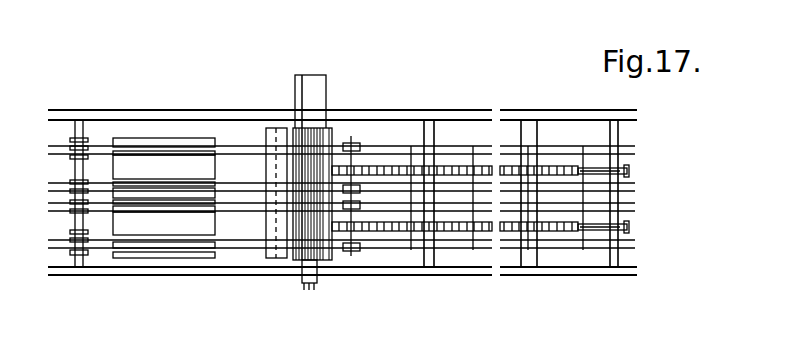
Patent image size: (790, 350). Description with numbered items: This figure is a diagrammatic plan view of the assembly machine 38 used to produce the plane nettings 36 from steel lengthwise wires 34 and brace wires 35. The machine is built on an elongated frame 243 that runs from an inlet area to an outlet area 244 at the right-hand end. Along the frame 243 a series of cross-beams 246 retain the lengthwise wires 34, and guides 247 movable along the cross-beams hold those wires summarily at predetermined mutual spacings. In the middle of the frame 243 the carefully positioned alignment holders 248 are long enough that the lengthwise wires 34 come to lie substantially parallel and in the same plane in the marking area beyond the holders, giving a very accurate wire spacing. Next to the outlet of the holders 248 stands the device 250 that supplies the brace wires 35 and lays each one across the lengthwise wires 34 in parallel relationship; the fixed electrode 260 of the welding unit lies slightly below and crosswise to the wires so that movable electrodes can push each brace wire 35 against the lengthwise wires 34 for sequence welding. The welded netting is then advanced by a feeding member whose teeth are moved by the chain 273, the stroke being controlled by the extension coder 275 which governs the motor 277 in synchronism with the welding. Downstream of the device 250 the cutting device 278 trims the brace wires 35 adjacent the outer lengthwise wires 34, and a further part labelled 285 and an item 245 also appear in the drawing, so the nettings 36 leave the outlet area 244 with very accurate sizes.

The lengthwise wires 34 is at (457, 145).
The brace wires 35 is at (473, 250).
The plane nettings 36 is at (641, 150).
The assembly machine 38 is at (535, 102).
The elongated frame 243 is at (67, 283).
The outlet area 244 is at (603, 285).
The bottom plate 245 is at (378, 270).
The cross-beams 246 is at (77, 120).
The guides 247 is at (90, 142).
The alignment holders 248 is at (214, 177).
The brace wire supplying device 250 is at (333, 136).
The fixed electrode 260 is at (269, 257).
The chain 273 is at (629, 169).
The extension coder 275 is at (300, 286).
The motor 277 is at (318, 92).
The cutting device 278 is at (361, 142).
The rod 285 is at (302, 100).